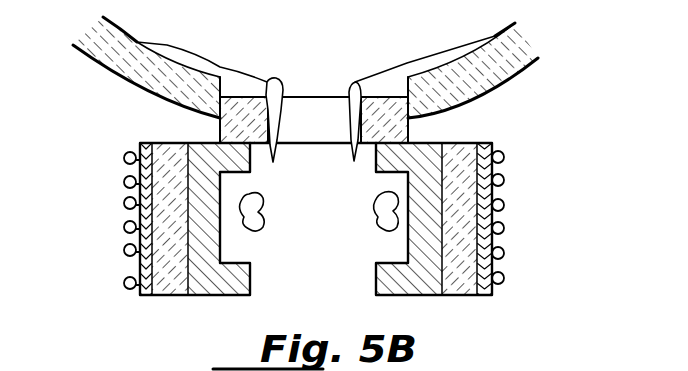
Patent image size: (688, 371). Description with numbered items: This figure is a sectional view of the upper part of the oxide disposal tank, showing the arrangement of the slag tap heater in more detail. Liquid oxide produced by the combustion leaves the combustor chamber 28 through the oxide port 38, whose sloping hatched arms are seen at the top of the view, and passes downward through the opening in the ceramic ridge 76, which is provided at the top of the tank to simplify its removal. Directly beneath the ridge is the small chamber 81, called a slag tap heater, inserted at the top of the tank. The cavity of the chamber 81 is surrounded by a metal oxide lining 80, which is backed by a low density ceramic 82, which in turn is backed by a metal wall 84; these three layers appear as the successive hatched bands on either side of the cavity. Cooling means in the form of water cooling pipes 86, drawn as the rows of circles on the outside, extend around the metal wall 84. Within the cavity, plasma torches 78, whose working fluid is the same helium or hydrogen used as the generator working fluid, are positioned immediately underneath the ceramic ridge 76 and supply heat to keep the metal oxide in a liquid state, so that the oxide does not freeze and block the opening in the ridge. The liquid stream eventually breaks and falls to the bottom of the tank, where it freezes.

The chamber 28 is at (330, 41).
The oxide port 38 is at (220, 80).
The ceramic ridge 76 is at (276, 80).
The plasma torches 78 is at (264, 202).
The metal oxide lining 80 is at (222, 247).
The chamber (slag tap heater) 81 is at (338, 221).
The low density ceramic 82 is at (457, 285).
The metal wall 84 is at (485, 290).
The water cooling pipes 86 is at (503, 222).